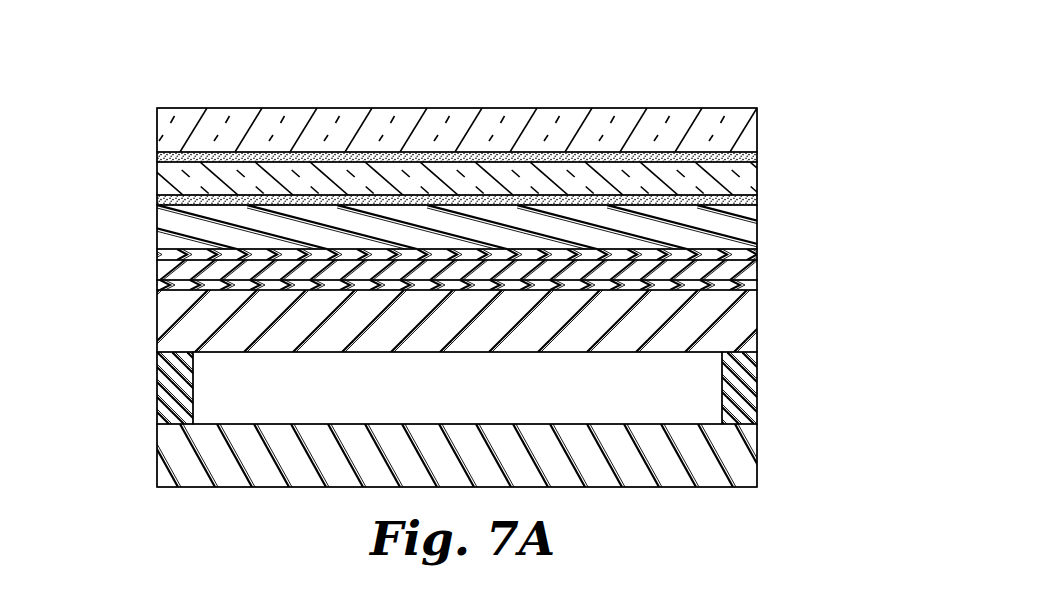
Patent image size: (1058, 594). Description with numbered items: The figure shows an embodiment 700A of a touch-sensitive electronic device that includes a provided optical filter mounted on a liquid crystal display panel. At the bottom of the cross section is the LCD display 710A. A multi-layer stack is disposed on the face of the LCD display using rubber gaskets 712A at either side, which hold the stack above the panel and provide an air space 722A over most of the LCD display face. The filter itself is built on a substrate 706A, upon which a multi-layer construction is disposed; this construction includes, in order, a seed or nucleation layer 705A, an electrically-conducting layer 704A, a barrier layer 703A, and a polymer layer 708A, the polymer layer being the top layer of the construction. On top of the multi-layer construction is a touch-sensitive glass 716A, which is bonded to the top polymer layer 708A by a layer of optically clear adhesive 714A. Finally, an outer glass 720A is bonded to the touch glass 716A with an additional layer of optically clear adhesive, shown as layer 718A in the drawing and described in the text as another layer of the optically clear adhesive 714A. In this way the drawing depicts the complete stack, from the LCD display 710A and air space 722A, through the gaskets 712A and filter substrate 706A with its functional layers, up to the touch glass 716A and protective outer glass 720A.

The touch-sensitive electronic device 700A is at (748, 57).
The glass 720A is at (748, 130).
The interlayer 718A is at (157, 156).
The touch-sensitive glass 716A is at (748, 183).
The optically clear adhesive 714A is at (157, 198).
The polymer layer 708A is at (157, 220).
The barrier layer 703A is at (157, 255).
The electrically-conducting layer 704A is at (157, 271).
The seed layer 705A is at (157, 286).
The substrate 706A is at (748, 322).
The rubber gaskets 712A is at (752, 393).
The air space 722A is at (457, 388).
The LCD display 710A is at (752, 453).